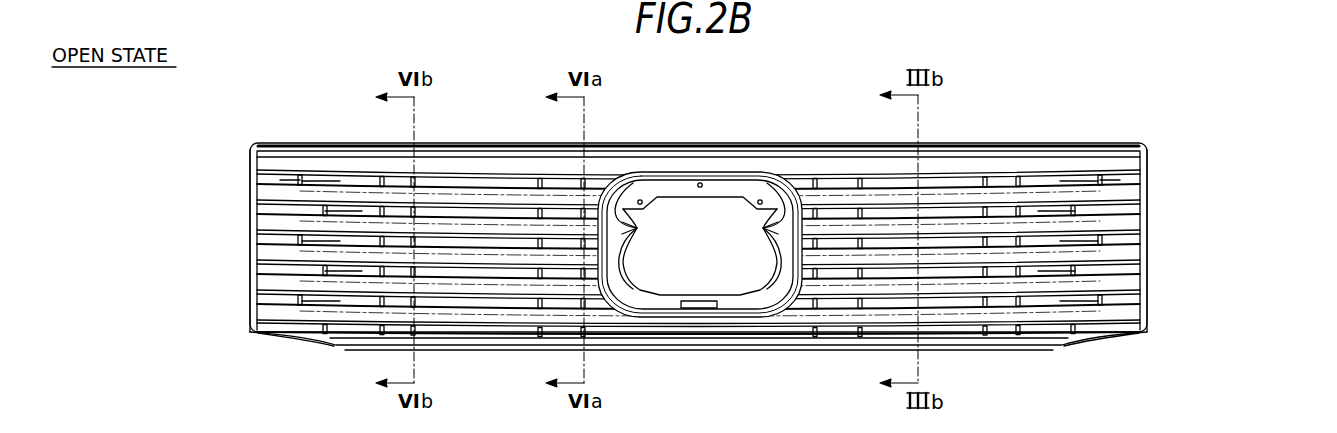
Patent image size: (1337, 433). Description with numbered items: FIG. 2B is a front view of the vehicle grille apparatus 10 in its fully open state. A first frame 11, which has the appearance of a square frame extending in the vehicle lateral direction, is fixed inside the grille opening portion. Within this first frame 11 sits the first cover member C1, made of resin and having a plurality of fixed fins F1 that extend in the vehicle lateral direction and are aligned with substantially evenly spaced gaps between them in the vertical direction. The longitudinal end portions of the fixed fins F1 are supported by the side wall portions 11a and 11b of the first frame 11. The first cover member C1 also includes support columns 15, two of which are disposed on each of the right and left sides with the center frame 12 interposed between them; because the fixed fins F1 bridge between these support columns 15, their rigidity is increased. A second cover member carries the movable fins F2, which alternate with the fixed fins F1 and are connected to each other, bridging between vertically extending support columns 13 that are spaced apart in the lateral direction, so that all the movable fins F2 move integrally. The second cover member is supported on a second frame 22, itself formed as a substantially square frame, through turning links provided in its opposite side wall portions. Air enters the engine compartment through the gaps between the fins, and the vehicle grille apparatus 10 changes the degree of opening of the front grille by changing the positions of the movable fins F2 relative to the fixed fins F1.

The vehicle grille apparatus 10 is at (702, 223).
The first frame 11 is at (735, 147).
The side wall portion 11a is at (251, 162).
The side wall portion 11b is at (1148, 318).
The center frame 12 is at (700, 258).
The support column 13 is at (378, 304).
The support column 15 is at (1012, 120).
The second frame 22 is at (330, 325).
The fixed fin F1 is at (252, 188).
The movable fin F2 is at (702, 392).
The first cover member C1 is at (702, 240).